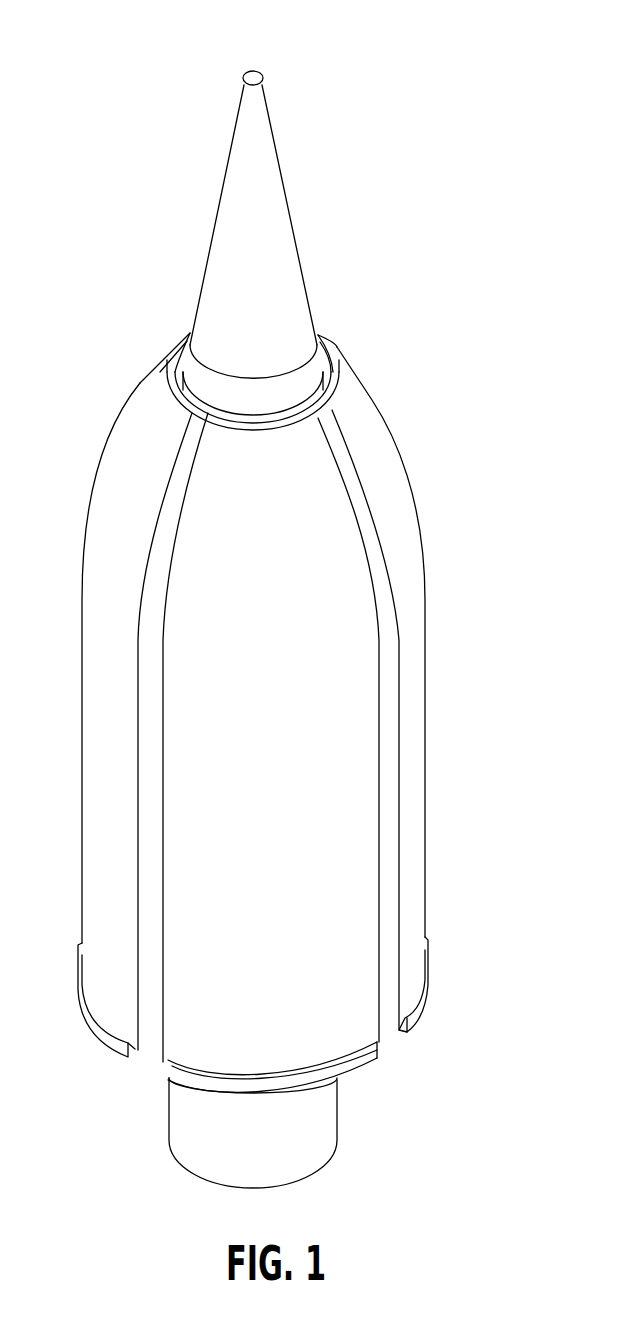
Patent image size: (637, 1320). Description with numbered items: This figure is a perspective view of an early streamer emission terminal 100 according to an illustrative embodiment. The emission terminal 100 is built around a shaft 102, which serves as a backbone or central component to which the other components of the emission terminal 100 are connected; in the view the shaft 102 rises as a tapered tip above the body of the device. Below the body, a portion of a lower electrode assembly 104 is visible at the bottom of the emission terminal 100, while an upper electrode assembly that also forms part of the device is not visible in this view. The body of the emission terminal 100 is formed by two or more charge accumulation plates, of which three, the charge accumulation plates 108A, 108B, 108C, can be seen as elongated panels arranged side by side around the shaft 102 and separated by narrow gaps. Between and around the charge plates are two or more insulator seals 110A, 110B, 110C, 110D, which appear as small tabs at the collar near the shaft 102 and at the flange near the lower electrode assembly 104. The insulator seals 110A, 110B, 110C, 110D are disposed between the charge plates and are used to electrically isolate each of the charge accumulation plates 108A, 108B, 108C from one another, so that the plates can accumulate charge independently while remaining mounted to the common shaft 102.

The early streamer emission terminal 100 is at (363, 145).
The shaft 102 is at (270, 246).
The lower electrode assembly 104 is at (318, 1133).
The charge accumulation plate 108A is at (400, 504).
The charge accumulation plate 108B is at (296, 557).
The charge accumulation plate 108C is at (145, 496).
The insulator seal 110A is at (315, 333).
The insulator seal 110B is at (390, 1025).
The insulator seal 110C is at (148, 1047).
The insulator seal 110D is at (172, 337).